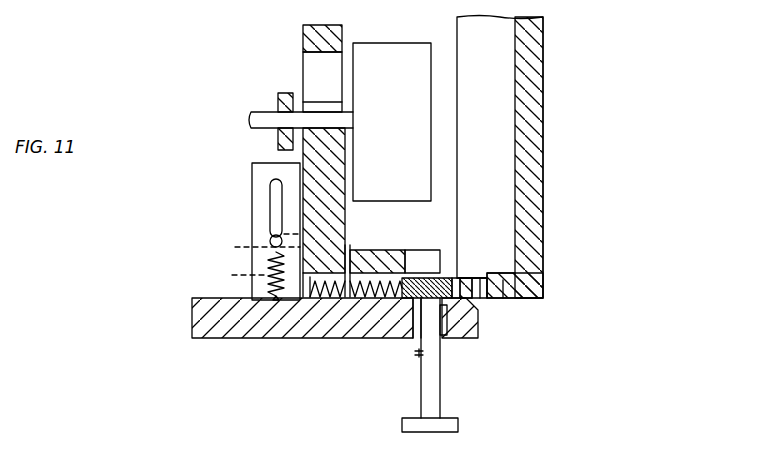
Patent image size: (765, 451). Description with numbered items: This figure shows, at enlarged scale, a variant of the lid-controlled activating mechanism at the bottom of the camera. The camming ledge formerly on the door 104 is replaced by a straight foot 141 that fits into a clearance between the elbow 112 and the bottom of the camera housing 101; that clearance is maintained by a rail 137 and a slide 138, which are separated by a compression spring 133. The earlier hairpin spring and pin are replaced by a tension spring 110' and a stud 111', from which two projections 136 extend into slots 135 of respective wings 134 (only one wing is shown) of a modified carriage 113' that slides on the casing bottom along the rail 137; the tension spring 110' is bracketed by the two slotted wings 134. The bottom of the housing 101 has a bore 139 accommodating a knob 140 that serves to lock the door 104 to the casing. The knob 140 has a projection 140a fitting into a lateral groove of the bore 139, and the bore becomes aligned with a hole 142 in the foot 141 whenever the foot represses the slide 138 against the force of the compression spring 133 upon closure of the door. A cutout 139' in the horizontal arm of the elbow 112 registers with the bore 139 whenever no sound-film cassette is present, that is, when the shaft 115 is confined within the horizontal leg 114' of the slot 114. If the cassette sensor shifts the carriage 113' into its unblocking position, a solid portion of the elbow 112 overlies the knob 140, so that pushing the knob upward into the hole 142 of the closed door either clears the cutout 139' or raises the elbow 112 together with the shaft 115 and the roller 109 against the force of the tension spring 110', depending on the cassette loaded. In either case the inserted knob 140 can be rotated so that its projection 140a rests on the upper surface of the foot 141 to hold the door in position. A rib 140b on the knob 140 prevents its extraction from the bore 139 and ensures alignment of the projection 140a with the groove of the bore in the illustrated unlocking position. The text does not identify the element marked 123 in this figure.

The camera housing 101 is at (200, 323).
The door 104 is at (535, 178).
The roller 109 is at (430, 30).
The tension spring 110' is at (237, 276).
The stud 111' is at (244, 251).
The elbow 112 is at (310, 37).
The carriage 113' is at (359, 200).
The slot 114 is at (290, 79).
The horizontal leg of slot 114' is at (289, 83).
The shaft 115 is at (249, 121).
The collar 123 is at (278, 99).
The compression spring 133 is at (362, 288).
The wing 134 is at (252, 170).
The slot of wing 135 is at (276, 204).
The projection 136 is at (270, 241).
The rail 137 is at (312, 300).
The slide 138 is at (445, 280).
The bore 139 is at (386, 363).
The cutout 139' is at (428, 245).
The knob 140 is at (402, 425).
The projection of knob 140a is at (423, 405).
The rib 140b is at (442, 322).
The foot 141 is at (510, 298).
The hole 142 is at (495, 272).